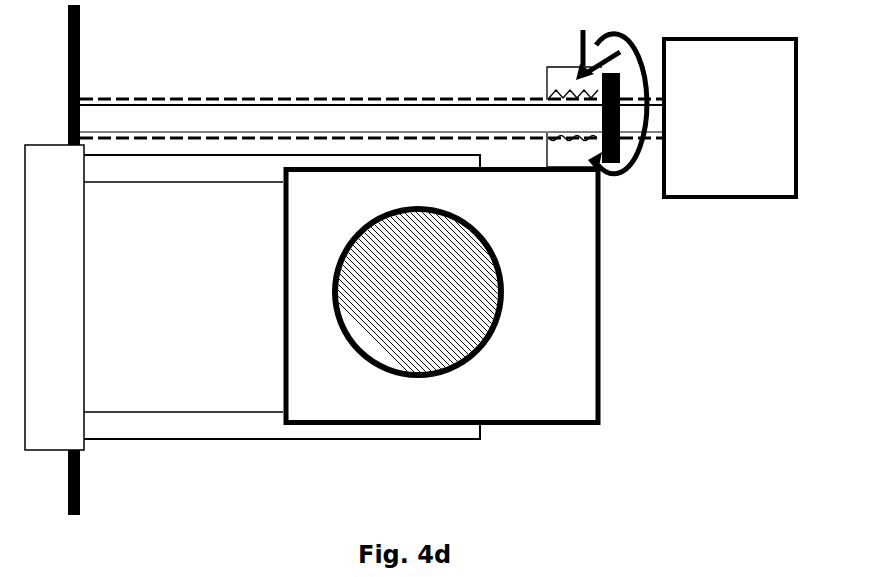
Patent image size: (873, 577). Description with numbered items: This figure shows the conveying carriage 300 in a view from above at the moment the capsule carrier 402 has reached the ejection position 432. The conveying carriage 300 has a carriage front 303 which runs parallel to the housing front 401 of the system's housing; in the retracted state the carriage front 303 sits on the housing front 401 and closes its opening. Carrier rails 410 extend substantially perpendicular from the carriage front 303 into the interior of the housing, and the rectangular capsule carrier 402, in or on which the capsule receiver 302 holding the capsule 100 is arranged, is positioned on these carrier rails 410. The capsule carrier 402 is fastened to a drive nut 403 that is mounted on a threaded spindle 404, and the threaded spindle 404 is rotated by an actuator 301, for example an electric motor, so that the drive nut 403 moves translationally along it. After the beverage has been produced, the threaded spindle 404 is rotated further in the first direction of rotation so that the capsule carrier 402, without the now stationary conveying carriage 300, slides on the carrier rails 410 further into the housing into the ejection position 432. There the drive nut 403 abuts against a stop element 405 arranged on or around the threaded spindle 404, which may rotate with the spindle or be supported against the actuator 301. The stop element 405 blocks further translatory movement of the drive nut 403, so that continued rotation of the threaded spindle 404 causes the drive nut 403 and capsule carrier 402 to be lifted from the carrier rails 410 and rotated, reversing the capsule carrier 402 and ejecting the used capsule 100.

The capsule 100 is at (450, 345).
The conveying carriage 300 is at (236, 442).
The actuator 301 is at (728, 185).
The capsule receiver 302 is at (379, 282).
The carriage front 303 is at (45, 158).
The housing front 401 is at (83, 19).
The capsule carrier 402 is at (583, 341).
The drive nut 403 is at (548, 74).
The threaded spindle 404 is at (445, 98).
The stop element 405 is at (612, 180).
The carrier rails 410 is at (129, 183).
The ejection position 432 is at (570, 37).